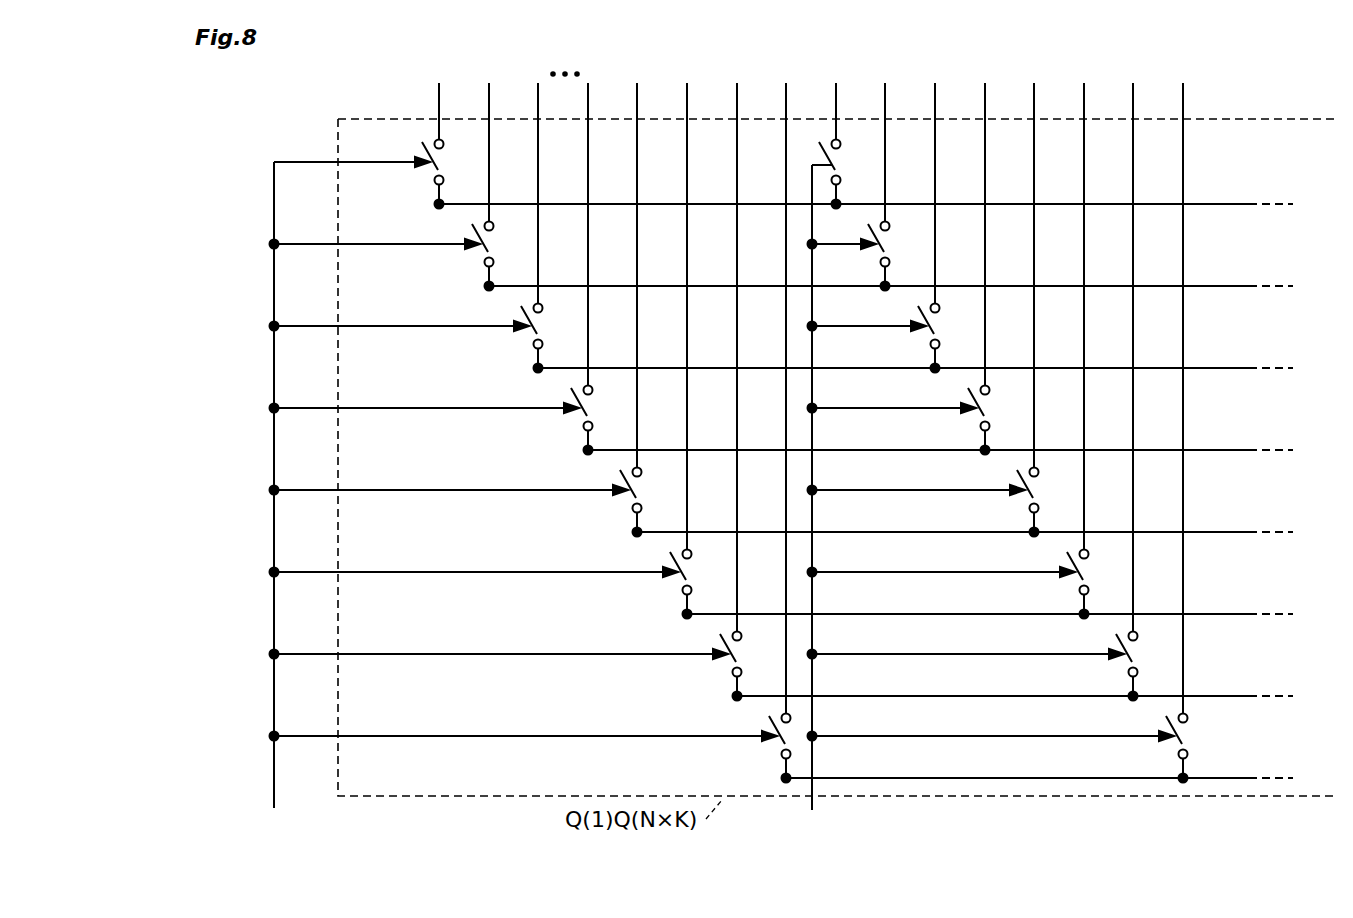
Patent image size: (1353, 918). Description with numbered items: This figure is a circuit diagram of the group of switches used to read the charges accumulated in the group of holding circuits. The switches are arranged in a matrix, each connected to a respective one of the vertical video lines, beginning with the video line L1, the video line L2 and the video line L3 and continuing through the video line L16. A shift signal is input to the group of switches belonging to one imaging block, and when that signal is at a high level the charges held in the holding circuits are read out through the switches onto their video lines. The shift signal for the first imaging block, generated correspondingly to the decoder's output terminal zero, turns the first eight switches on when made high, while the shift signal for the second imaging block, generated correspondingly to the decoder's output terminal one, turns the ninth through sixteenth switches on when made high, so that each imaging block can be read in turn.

The video line L1 is at (438, 104).
The video line L2 is at (488, 104).
The video line L3 is at (537, 104).
The video line L16 is at (1184, 107).